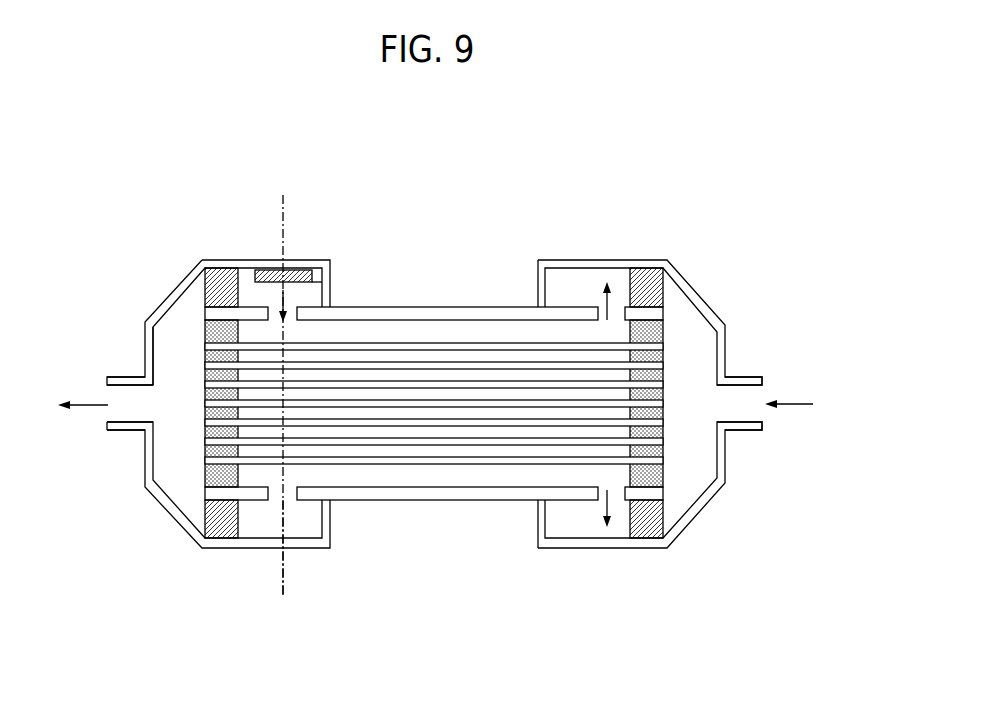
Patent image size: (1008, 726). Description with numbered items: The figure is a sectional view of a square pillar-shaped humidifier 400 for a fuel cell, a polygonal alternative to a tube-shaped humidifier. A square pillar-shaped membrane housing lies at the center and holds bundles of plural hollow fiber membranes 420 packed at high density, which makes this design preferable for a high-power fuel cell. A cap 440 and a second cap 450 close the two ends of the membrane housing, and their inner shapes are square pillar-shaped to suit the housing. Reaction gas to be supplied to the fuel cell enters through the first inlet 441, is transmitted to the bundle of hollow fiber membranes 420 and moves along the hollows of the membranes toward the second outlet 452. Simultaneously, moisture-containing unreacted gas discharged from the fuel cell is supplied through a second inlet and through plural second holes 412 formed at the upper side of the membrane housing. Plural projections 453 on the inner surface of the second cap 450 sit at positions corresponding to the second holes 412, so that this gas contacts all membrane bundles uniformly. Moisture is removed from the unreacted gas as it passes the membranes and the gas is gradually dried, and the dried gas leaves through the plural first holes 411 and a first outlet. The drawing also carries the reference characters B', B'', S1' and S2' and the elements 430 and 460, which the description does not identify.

The square pillar-shaped humidifier 400 is at (433, 327).
The first holes 411 is at (617, 313).
The second holes 412 is at (288, 495).
The hollow fiber membranes 420 is at (410, 458).
The tube support plate 430 is at (218, 472).
The cap 440 is at (563, 267).
The first inlet 441 is at (745, 410).
The second cap 450 is at (185, 285).
The second outlet 452 is at (115, 397).
The projections 453 is at (262, 271).
The sealing member 460 is at (650, 282).
The section line B' is at (285, 388).
The section line B'' is at (287, 561).
The first space S1' is at (131, 298).
The second space S2' is at (357, 247).